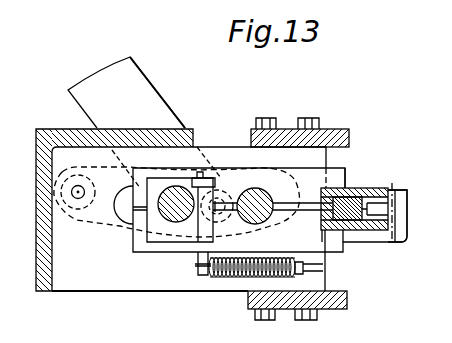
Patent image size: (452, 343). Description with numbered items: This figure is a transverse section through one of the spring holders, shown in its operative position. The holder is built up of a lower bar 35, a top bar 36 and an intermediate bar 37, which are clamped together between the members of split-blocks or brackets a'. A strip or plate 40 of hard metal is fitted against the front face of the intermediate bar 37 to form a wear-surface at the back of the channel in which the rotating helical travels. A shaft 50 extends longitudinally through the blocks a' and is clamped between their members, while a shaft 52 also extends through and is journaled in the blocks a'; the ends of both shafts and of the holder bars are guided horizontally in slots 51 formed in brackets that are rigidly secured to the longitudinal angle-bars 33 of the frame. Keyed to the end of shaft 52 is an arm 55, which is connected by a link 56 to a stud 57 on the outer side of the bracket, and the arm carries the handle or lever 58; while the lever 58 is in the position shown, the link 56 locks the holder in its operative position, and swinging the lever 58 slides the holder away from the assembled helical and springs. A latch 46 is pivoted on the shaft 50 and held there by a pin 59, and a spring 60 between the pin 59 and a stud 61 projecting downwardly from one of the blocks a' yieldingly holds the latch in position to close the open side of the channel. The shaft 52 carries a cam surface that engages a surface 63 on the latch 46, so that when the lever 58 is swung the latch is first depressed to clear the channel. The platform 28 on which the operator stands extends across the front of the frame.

The longitudinal angle-bar 33 is at (57, 130).
The handle or lever 58 is at (157, 102).
The arm 55 is at (221, 190).
The shaft 52 is at (264, 194).
The split-block or bracket a' is at (364, 161).
The strip or plate of hard metal 40 is at (360, 200).
The top bar 36 is at (378, 188).
The intermediate bar 37 is at (322, 216).
The latch 46 is at (398, 217).
The lower bar 35 is at (374, 231).
The stud 61 is at (325, 275).
The surface 63 is at (322, 231).
The shaft 50 is at (172, 215).
The slot 51 is at (128, 226).
The link 56 is at (92, 218).
The stud 57 is at (77, 196).
The pin 59 is at (199, 276).
The spring 60 is at (232, 276).
The platform 28 is at (321, 309).